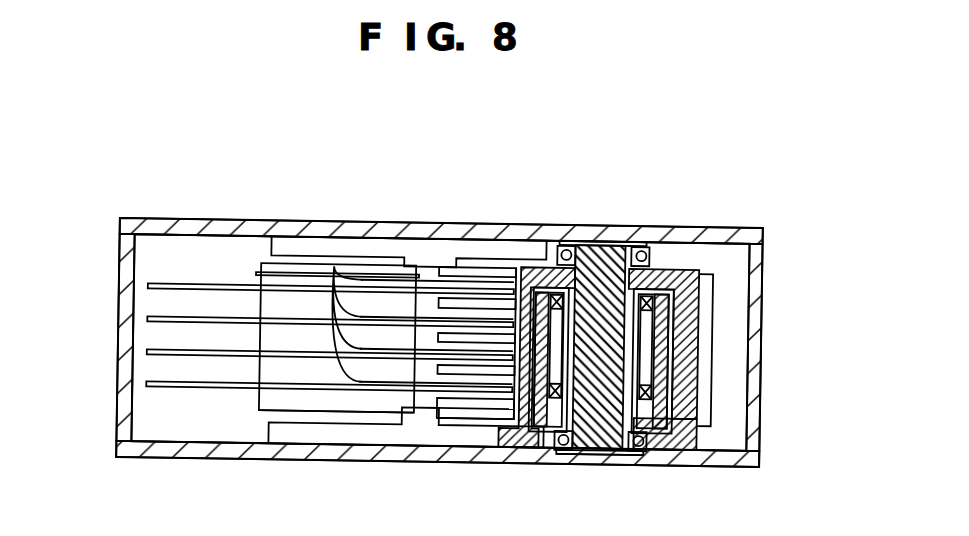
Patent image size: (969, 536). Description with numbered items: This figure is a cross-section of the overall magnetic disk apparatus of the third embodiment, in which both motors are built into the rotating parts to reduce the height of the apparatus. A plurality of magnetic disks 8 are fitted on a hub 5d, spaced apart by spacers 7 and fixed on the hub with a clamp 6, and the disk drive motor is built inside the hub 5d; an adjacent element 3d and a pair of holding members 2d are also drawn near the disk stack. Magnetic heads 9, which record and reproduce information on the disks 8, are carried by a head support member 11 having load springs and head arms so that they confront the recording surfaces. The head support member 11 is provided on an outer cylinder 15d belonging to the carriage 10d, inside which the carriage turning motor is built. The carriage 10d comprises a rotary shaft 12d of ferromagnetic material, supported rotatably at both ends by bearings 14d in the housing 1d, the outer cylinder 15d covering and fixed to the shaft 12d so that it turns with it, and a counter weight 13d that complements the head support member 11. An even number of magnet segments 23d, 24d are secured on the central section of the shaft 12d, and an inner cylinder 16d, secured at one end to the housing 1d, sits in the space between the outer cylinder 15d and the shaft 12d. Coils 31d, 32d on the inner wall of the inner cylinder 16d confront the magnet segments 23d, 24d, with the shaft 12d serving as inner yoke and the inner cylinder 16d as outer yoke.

The housing 1d is at (112, 428).
The holding members 2d is at (293, 247).
The piezoelectric element block 3d is at (268, 298).
The hub 5d is at (260, 403).
The clamp 6 is at (257, 313).
The spacer 7 is at (305, 260).
The magnetic disk 8 is at (142, 386).
The magnetic head 9 is at (336, 268).
The head support member 11 is at (483, 412).
The carriage 10d is at (722, 285).
The rotary shaft 12d is at (605, 252).
The counter weight 13d is at (683, 317).
The bearing 14d is at (645, 250).
The outer cylinder 15d is at (697, 310).
The inner cylinder 16d is at (690, 458).
The magnet segment 23d is at (640, 370).
The magnet segment 24d is at (587, 450).
The coil 31d is at (652, 388).
The coil 32d is at (520, 437).